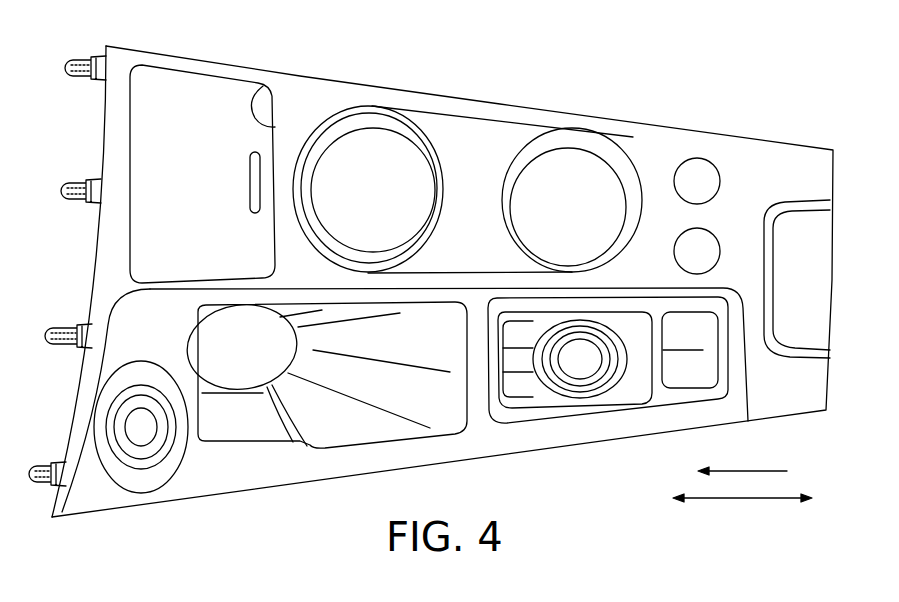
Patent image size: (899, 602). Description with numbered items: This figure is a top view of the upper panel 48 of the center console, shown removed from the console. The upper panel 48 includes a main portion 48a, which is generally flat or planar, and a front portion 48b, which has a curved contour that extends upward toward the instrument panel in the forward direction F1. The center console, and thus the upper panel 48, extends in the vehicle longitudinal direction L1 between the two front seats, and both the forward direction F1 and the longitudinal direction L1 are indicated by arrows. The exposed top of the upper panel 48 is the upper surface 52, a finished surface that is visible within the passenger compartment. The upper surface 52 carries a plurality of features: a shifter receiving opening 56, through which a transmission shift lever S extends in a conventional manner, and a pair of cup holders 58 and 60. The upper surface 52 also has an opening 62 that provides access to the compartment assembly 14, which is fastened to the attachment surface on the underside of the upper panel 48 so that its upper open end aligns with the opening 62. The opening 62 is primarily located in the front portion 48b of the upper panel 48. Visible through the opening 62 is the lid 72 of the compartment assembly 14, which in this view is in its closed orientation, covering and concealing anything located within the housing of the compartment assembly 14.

The compartment assembly 14 is at (170, 96).
The upper panel 48 is at (663, 148).
The main portion 48a is at (758, 167).
The front portion 48b is at (113, 257).
The upper surface 52 is at (633, 142).
The shifter receiving opening 56 is at (233, 440).
The cup holder 58 is at (392, 210).
The cup holder 60 is at (550, 187).
The opening 62 is at (267, 85).
The lid 72 is at (213, 115).
The transmission shift lever S is at (220, 347).
The forward direction F1 is at (758, 470).
The vehicle longitudinal direction L1 is at (740, 500).